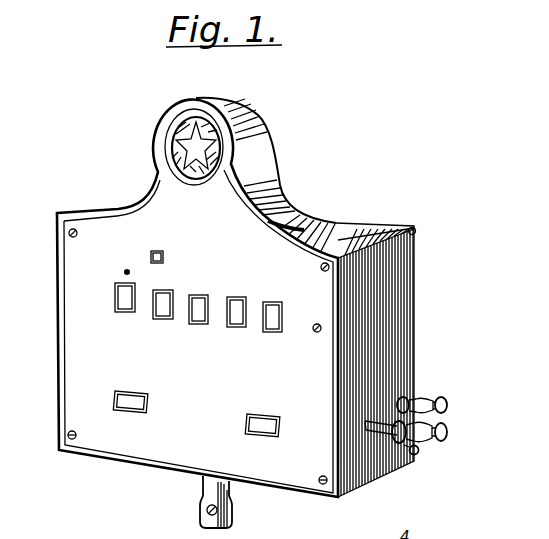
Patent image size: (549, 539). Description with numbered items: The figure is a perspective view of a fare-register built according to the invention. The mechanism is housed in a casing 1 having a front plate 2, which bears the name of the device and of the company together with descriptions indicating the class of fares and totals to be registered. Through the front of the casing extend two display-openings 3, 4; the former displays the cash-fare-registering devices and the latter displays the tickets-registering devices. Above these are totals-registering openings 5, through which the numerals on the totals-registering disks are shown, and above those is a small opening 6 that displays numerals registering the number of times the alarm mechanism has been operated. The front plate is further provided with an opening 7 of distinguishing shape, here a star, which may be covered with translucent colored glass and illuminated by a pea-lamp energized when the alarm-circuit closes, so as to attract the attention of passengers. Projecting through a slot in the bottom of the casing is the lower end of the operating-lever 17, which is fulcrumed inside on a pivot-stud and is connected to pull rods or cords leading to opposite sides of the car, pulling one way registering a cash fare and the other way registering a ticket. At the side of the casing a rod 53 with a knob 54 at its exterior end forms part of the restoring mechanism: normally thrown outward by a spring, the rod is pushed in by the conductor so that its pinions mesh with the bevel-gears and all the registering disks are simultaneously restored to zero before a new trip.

The casing 1 is at (285, 197).
The front plate 2 is at (78, 377).
The display-opening 3 is at (277, 421).
The display-opening 4 is at (125, 392).
The totals-registering openings 5 is at (231, 314).
The small opening 6 is at (163, 258).
The opening 7 is at (178, 150).
The operating-lever 17 is at (232, 516).
The rod 53 is at (378, 448).
The knob 54 is at (405, 454).